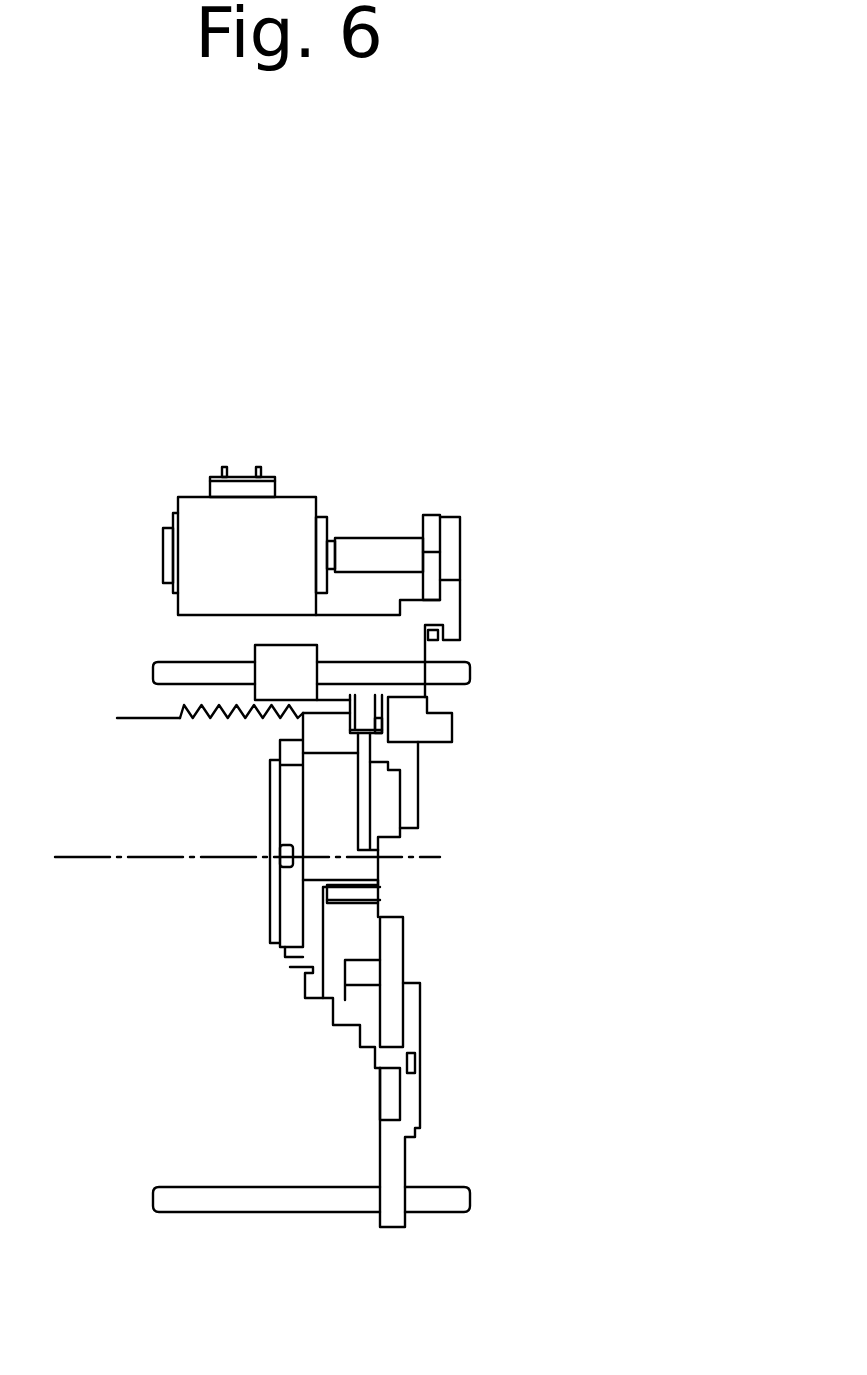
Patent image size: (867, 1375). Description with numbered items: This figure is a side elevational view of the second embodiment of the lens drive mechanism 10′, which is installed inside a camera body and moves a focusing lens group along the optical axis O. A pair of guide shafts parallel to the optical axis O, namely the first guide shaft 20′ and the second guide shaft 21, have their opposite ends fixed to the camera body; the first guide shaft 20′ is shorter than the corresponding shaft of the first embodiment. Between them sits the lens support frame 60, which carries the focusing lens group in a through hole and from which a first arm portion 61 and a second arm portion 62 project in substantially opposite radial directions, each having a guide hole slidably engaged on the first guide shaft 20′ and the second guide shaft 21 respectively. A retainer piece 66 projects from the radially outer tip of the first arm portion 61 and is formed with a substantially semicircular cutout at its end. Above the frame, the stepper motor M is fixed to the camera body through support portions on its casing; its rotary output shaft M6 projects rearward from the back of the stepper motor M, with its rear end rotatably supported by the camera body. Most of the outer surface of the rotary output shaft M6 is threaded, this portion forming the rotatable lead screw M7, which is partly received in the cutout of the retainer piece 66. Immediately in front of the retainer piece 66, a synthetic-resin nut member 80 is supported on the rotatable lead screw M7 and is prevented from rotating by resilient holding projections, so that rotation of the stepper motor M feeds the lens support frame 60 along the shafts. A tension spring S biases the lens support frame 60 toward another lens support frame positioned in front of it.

The stepper motor M is at (200, 510).
The rotary output shaft M6 is at (333, 548).
The rotatable lead screw M7 is at (375, 556).
The nut member 80 is at (427, 515).
The retainer piece 66 is at (453, 537).
The first arm portion 61 is at (450, 602).
The first guide shaft 20′ is at (173, 670).
The tension spring S is at (147, 718).
The lens drive mechanism 10′ is at (580, 745).
The optical axis O is at (148, 858).
The lens support frame 60 is at (283, 940).
The second arm portion 62 is at (395, 1153).
The second guide shaft 21 is at (216, 1198).